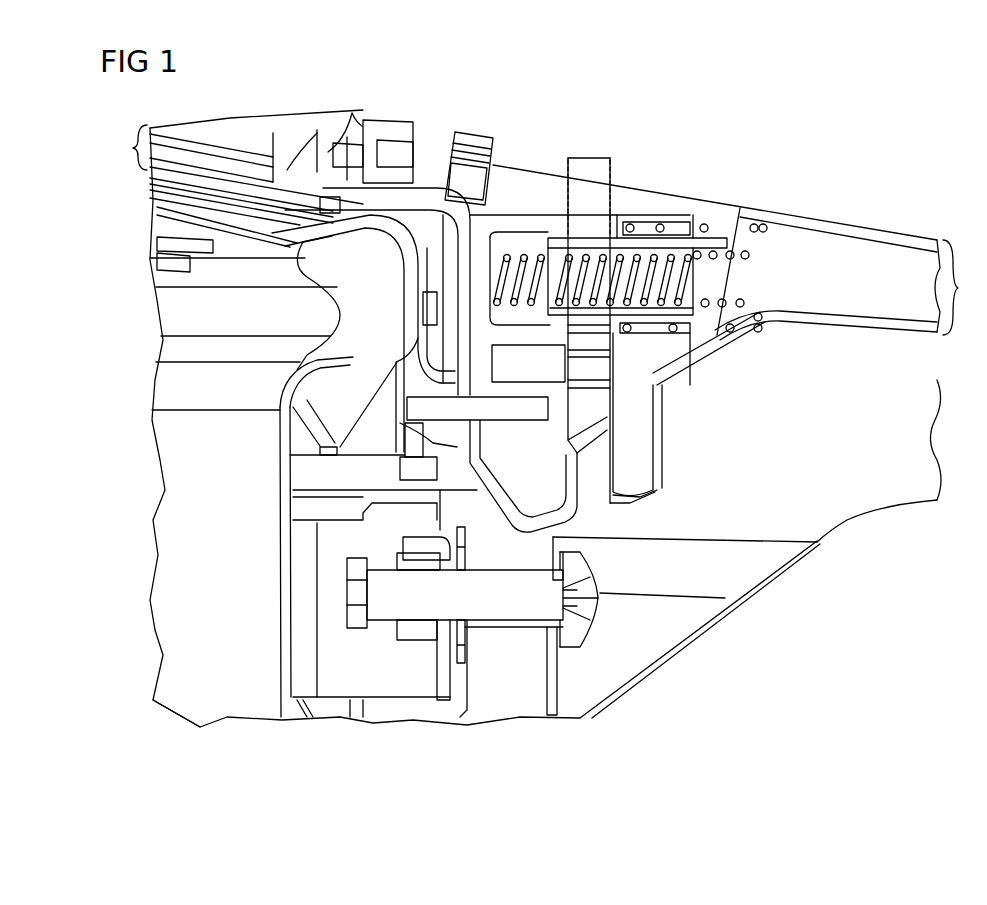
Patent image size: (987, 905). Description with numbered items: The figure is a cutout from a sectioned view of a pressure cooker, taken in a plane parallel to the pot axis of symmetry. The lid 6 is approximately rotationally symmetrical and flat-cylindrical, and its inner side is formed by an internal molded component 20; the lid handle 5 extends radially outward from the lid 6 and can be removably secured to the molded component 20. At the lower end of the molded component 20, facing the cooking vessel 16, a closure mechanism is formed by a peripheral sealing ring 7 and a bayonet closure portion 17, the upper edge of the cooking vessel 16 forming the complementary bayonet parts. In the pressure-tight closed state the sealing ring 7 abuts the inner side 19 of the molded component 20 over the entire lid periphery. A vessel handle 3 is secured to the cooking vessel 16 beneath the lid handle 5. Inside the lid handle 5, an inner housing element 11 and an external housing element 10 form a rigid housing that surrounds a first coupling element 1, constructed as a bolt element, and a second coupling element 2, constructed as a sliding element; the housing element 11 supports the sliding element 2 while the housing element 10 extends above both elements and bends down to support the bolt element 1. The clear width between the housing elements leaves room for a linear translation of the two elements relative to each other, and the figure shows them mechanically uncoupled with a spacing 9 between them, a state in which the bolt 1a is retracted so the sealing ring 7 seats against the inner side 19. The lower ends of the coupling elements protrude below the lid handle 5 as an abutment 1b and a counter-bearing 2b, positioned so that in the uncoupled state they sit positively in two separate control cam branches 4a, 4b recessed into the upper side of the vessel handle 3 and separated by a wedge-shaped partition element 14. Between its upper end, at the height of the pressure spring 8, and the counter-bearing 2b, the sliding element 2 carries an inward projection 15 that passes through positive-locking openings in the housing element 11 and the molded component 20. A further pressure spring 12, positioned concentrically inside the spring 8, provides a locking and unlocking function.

The first coupling element 1 is at (607, 225).
The bolt 1a is at (432, 292).
The abutment 1b is at (640, 465).
The second coupling element 2 is at (517, 228).
The counter-bearing 2b is at (555, 478).
The vessel handle 3 is at (940, 455).
The control cam branch 4a is at (632, 494).
The control cam branch 4b is at (445, 603).
The lid handle 5 is at (885, 265).
The lid 6 is at (863, 218).
The sealing ring 7 is at (160, 393).
The pressure spring 8 is at (650, 222).
The spacing 9 is at (590, 158).
The external housing element 10 is at (545, 182).
The inner housing element 11 is at (457, 235).
The pressure spring 12 is at (703, 260).
The partition element 14 is at (593, 482).
The projection 15 is at (405, 414).
The cooking vessel 16 is at (275, 720).
The bayonet closure portion 17 is at (300, 422).
The inner side 19 is at (395, 296).
The internal molded component 20 is at (162, 195).